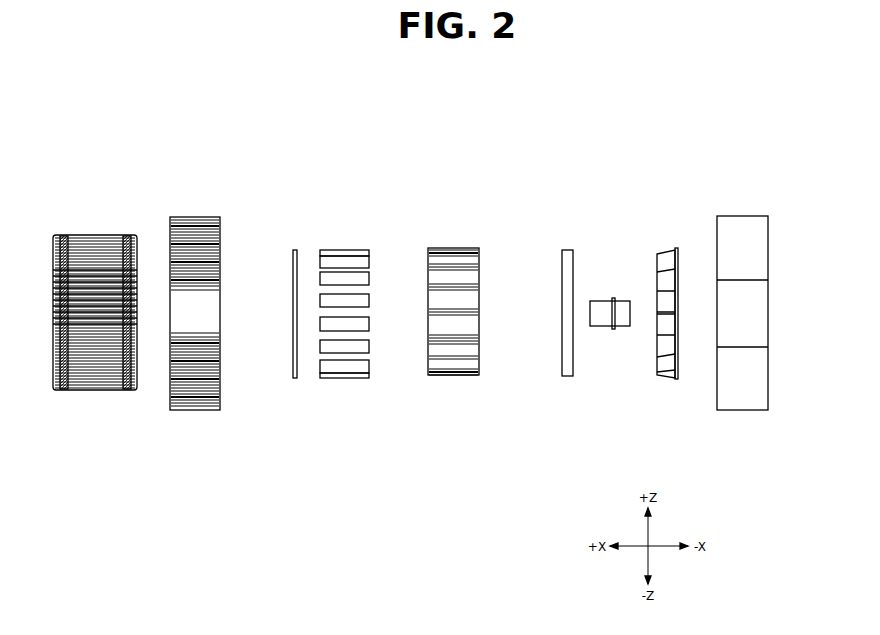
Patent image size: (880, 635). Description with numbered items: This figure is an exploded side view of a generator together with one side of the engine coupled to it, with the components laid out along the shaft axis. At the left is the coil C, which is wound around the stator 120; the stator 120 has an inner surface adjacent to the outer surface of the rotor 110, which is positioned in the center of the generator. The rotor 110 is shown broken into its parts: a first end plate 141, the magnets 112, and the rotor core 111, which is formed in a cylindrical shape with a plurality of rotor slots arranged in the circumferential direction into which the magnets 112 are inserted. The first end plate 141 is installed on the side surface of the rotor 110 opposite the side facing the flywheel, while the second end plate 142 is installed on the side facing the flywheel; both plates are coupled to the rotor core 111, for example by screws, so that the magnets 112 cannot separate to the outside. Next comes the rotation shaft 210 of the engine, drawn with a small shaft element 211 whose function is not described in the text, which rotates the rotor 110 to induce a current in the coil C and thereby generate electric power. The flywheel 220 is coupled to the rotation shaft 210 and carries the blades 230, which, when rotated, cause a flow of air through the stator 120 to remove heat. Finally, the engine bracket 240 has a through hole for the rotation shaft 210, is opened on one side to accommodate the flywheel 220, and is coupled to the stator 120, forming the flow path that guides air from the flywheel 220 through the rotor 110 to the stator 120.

The coil C is at (97, 390).
The stator 120 is at (197, 411).
The first end plate 141 is at (297, 378).
The magnet 112 is at (345, 378).
The rotor core 111 is at (455, 376).
The rotor 110 is at (465, 466).
The second end plate 142 is at (565, 377).
The rotation shaft 210 is at (601, 328).
The shaft 211 is at (612, 298).
The blade 230 is at (662, 252).
The flywheel 220 is at (677, 248).
The engine bracket 240 is at (744, 412).